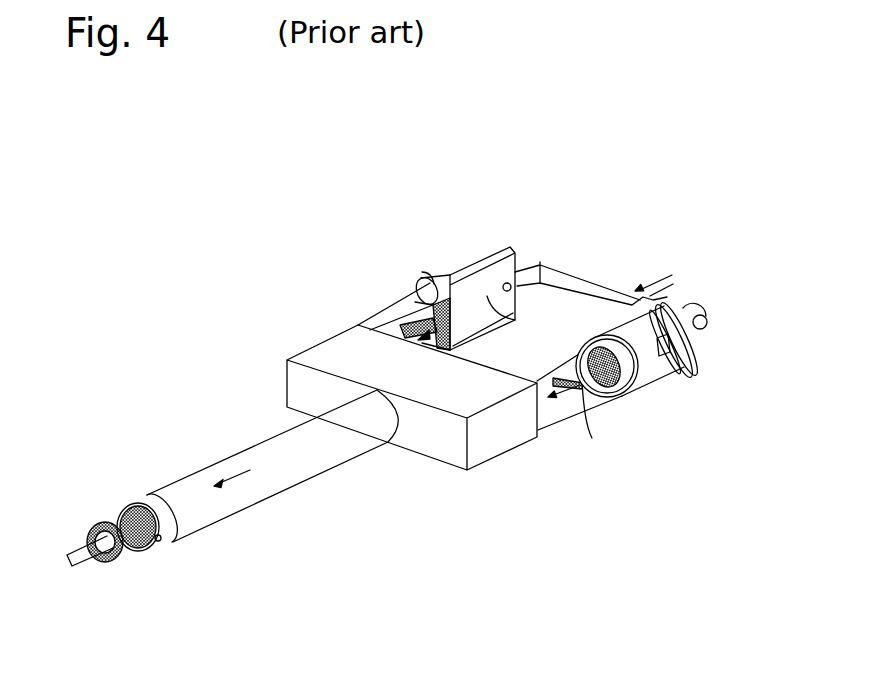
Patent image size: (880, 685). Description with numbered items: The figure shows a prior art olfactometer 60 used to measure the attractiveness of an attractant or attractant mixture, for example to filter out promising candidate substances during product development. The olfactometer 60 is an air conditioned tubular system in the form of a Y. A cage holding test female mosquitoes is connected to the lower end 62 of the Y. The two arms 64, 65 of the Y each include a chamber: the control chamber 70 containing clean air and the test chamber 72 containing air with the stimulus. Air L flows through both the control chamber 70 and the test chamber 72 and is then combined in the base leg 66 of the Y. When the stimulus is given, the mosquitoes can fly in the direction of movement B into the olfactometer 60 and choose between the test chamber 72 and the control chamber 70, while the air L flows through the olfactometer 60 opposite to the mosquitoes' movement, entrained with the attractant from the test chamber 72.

The olfactometer 60 is at (479, 622).
The lower end 62 is at (123, 560).
The arm 64 is at (387, 326).
The arm 65 is at (566, 408).
The base leg 66 is at (250, 488).
The control chamber 70 is at (468, 302).
The test chamber 72 is at (676, 340).